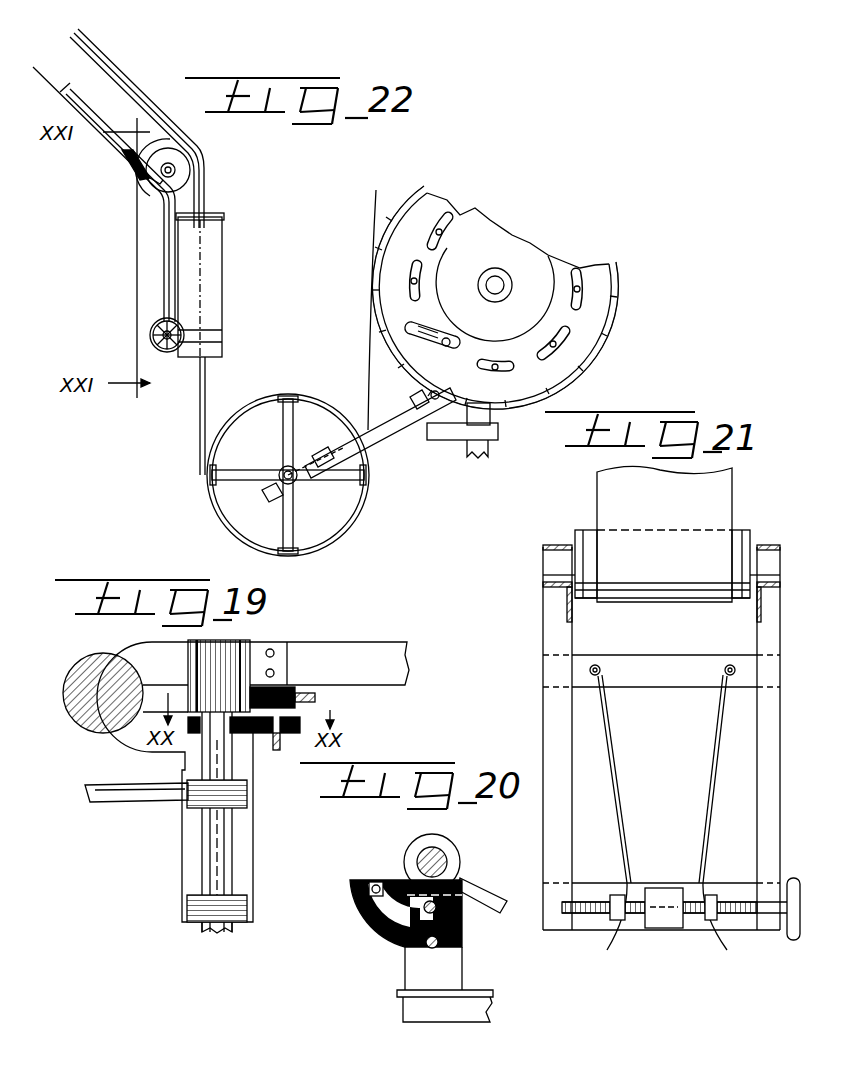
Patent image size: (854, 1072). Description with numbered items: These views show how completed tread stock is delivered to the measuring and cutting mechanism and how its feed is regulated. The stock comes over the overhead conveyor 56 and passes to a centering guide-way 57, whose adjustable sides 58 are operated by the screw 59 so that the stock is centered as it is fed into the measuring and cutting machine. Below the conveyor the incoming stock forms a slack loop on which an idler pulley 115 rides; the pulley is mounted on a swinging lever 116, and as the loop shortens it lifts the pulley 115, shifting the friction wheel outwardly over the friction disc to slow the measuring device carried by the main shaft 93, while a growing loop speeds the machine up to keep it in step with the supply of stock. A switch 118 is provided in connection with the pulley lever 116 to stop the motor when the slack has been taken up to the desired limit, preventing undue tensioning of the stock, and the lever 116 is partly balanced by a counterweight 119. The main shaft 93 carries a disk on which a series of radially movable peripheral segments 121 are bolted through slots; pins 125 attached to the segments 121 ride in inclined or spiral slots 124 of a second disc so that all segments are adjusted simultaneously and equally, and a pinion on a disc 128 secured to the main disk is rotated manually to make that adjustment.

In FIG. 22, the overhead conveyor 56 is at (110, 88).
In FIG. 21, the overhead conveyor 56 is at (712, 497).
In FIG. 22, the adjustable sides 58 is at (212, 312).
In FIG. 21, the adjustable sides 58 is at (715, 773).
In FIG. 22, the main shaft 93 is at (500, 276).
In FIG. 22, the disc 128 is at (495, 297).
In FIG. 22, the peripheral segments 121 is at (612, 312).
In FIG. 22, the pins 125 is at (420, 323).
In FIG. 22, the inclined or spiral slots 124 is at (440, 344).
In FIG. 22, the swinging lever 116 is at (396, 438).
In FIG. 19, the swinging lever 116 is at (352, 654).
In FIG. 22, the idler pulley 115 is at (292, 537).
In FIG. 21, the centering guide-way 57 is at (690, 672).
In FIG. 21, the screw 59 is at (630, 920).
In FIG. 19, the switch 118 is at (287, 714).
In FIG. 20, the switch 118 is at (372, 882).
In FIG. 20, the counterweight 119 is at (488, 900).